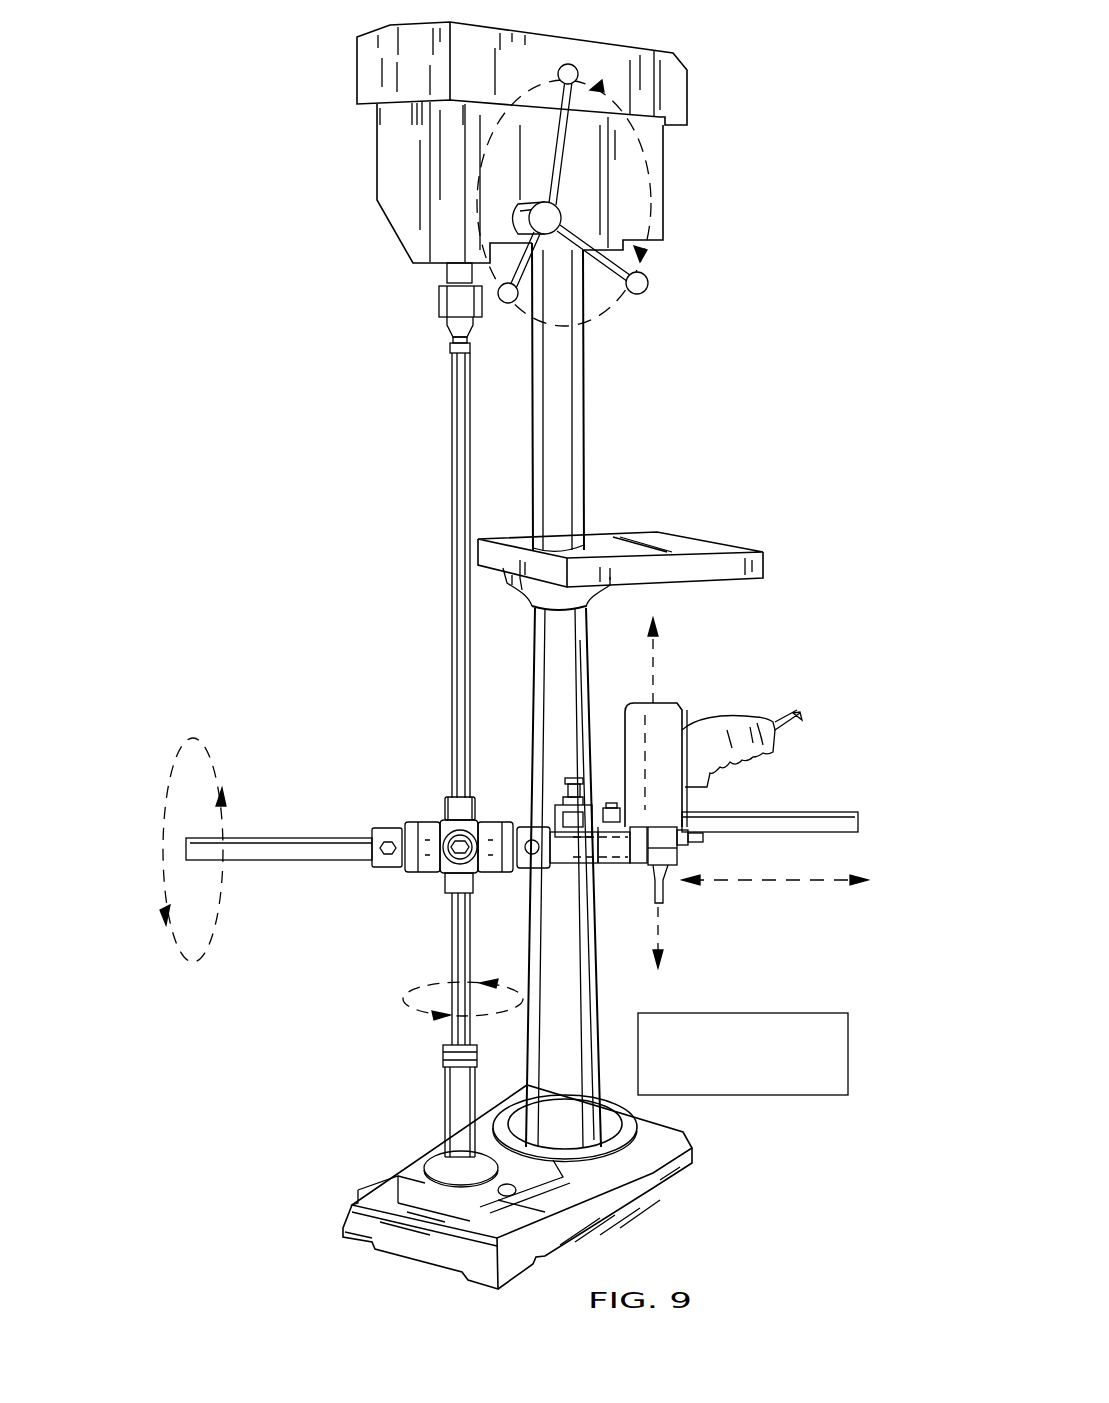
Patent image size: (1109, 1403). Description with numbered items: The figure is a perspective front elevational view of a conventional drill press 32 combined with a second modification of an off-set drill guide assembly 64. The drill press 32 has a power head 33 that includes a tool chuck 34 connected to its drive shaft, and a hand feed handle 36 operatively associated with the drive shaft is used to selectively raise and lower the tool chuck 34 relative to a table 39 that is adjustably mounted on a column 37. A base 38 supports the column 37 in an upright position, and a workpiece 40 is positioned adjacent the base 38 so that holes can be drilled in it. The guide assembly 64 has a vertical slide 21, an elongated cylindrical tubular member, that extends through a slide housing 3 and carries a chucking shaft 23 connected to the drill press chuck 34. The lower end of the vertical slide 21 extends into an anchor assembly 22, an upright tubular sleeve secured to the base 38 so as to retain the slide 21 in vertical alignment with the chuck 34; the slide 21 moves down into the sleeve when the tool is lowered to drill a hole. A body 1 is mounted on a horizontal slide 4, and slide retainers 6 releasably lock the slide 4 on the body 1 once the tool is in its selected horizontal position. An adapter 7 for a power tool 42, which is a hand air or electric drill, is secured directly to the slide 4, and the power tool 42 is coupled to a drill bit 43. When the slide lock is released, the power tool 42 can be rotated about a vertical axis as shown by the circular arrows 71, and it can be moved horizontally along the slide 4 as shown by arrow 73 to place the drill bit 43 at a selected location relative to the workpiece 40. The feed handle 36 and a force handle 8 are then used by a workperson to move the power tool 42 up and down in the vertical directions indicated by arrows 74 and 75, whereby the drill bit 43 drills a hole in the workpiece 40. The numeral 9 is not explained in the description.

The body 1 is at (430, 863).
The slide housing 3 is at (462, 808).
The horizontal slide 4 is at (572, 847).
The slide retainers 6 is at (390, 853).
The adapter 7 is at (628, 865).
The force handle 8 is at (800, 818).
The clamp 9 is at (553, 807).
The vertical slide 21 is at (462, 680).
The anchor assembly 22 is at (453, 1095).
The chucking shaft 23 is at (458, 343).
The drill press 32 is at (695, 200).
The power head 33 is at (395, 182).
The tool chuck 34 is at (447, 305).
The hand feed handle 36 is at (640, 293).
The column 37 is at (562, 458).
The base 38 is at (380, 1185).
The table 39 is at (667, 543).
The workpiece 40 is at (800, 1022).
The power tool 42 is at (670, 723).
The drill bit 43 is at (660, 893).
The off-set drill guide assembly 64 is at (378, 735).
The circular arrows 71 is at (437, 1013).
The arrow 73 is at (793, 880).
The arrow 74 is at (655, 667).
The arrow 75 is at (667, 950).